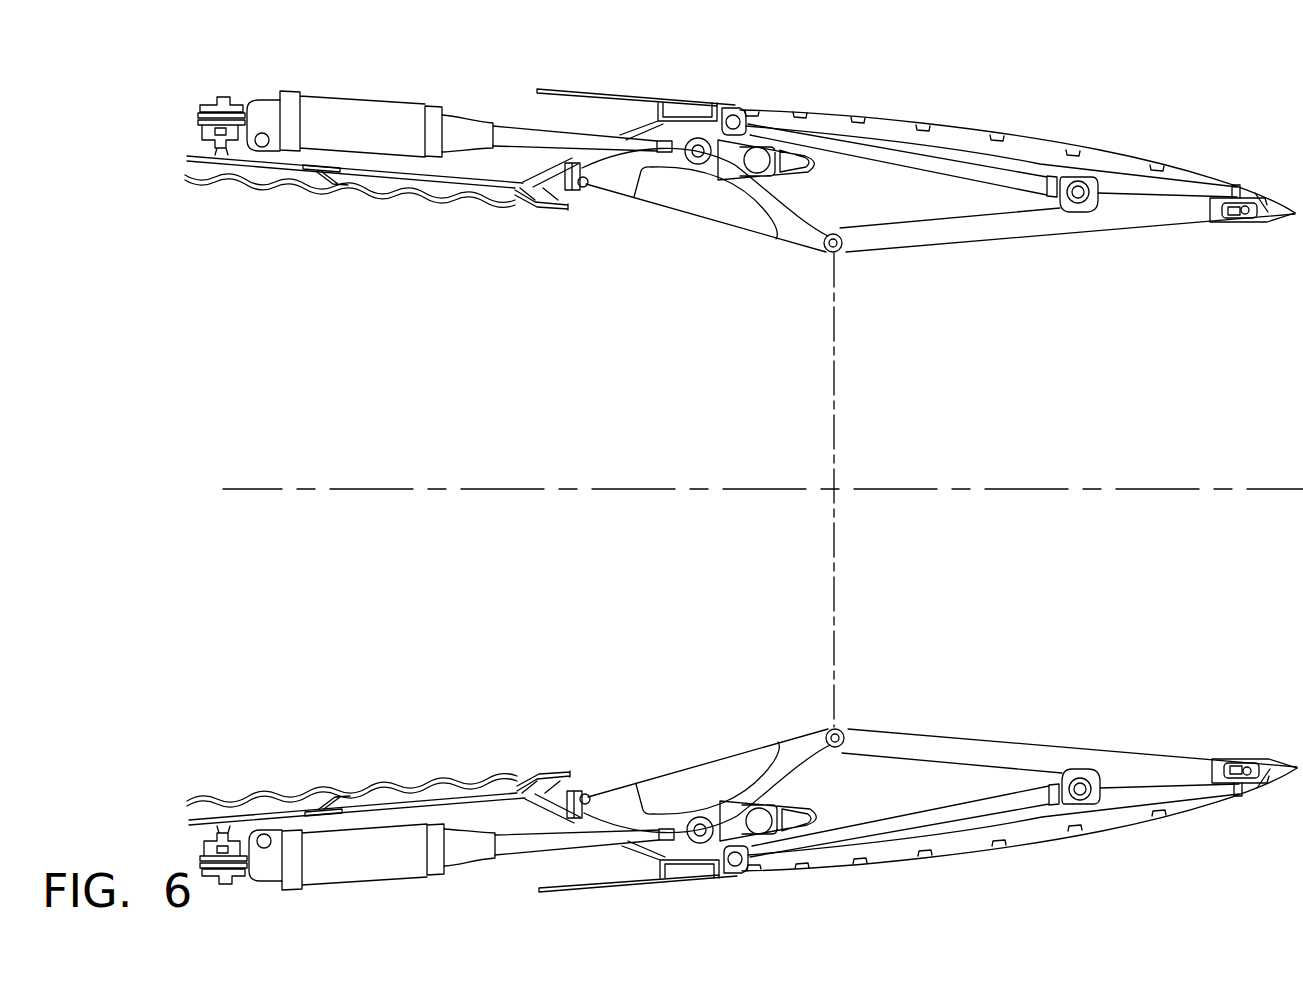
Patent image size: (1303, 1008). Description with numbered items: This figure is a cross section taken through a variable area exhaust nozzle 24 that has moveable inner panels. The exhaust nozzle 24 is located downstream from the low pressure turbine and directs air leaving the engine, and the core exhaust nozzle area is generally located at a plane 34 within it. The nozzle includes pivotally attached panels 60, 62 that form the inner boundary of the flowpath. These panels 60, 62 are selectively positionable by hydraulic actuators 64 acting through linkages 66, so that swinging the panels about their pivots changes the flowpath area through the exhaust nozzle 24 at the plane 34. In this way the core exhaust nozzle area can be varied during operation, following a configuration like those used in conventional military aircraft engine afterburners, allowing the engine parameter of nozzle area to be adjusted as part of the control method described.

The aft panel / flap door 24 is at (955, 116).
The centerline axis 34 is at (836, 366).
The curved support arm 60 is at (700, 220).
The link 62 is at (1017, 240).
The actuator 64 is at (407, 105).
The strut 66 is at (1025, 168).